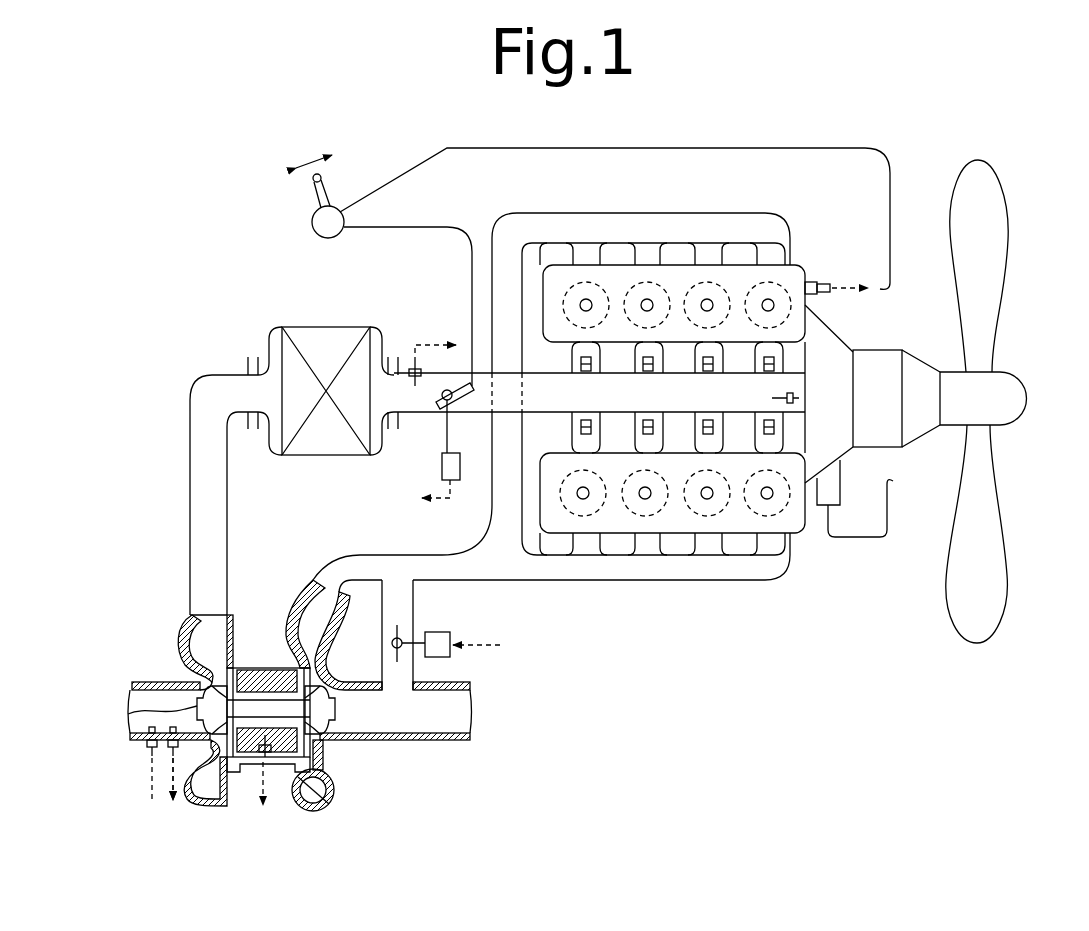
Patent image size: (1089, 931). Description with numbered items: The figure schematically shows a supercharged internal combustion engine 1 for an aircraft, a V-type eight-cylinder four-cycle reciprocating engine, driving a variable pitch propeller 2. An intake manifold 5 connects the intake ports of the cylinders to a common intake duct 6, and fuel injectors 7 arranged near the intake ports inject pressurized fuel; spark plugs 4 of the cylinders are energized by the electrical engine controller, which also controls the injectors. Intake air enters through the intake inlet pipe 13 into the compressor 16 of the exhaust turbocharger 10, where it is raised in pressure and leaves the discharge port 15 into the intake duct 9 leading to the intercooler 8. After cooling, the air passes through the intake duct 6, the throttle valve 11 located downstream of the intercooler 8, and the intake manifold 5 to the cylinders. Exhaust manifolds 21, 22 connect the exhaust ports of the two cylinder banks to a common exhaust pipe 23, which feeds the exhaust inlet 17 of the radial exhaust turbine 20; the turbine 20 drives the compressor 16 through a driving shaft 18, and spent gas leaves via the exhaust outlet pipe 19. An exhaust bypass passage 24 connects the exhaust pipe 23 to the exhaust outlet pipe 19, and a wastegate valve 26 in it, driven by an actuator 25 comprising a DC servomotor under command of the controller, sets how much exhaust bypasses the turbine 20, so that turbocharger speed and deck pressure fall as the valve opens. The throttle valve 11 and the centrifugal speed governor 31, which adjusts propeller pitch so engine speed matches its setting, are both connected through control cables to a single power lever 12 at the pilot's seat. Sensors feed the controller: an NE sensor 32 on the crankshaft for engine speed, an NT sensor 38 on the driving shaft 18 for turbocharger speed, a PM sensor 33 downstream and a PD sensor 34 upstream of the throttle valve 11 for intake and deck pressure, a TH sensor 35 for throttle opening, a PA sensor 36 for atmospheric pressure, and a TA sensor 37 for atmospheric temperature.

The internal combustion engine 1 is at (803, 259).
The propeller 2 is at (987, 185).
The spark plugs 4 is at (707, 499).
The intake manifold 5 is at (785, 360).
The intake duct 6 is at (783, 382).
The fuel injectors 7 is at (587, 418).
The intercooler 8 is at (311, 452).
The intake duct 9 is at (189, 445).
The exhaust turbocharger 10 is at (262, 666).
The throttle valve 11 is at (438, 391).
The power lever 12 is at (333, 198).
The intake inlet pipe 13 is at (146, 689).
The discharge port 15 is at (195, 630).
The compressor 16 is at (136, 709).
The exhaust inlet 17 is at (302, 612).
The driving shaft 18 is at (324, 796).
The exhaust outlet pipe 19 is at (447, 728).
The exhaust turbine 20 is at (337, 712).
The exhaust manifold 21 is at (523, 224).
The exhaust manifold 22 is at (773, 582).
The common exhaust pipe 23 is at (360, 560).
The exhaust bypass passage 24 is at (394, 680).
The actuator 25 is at (437, 631).
The wastegate valve 26 is at (396, 633).
The speed governor 31 is at (818, 510).
The NE sensor 32 is at (832, 286).
The PM sensor 33 is at (800, 398).
The PD sensor 34 is at (412, 368).
The TH sensor 35 is at (455, 483).
The PA sensor 36 is at (195, 805).
The TA sensor 37 is at (147, 743).
The NT sensor 38 is at (270, 763).